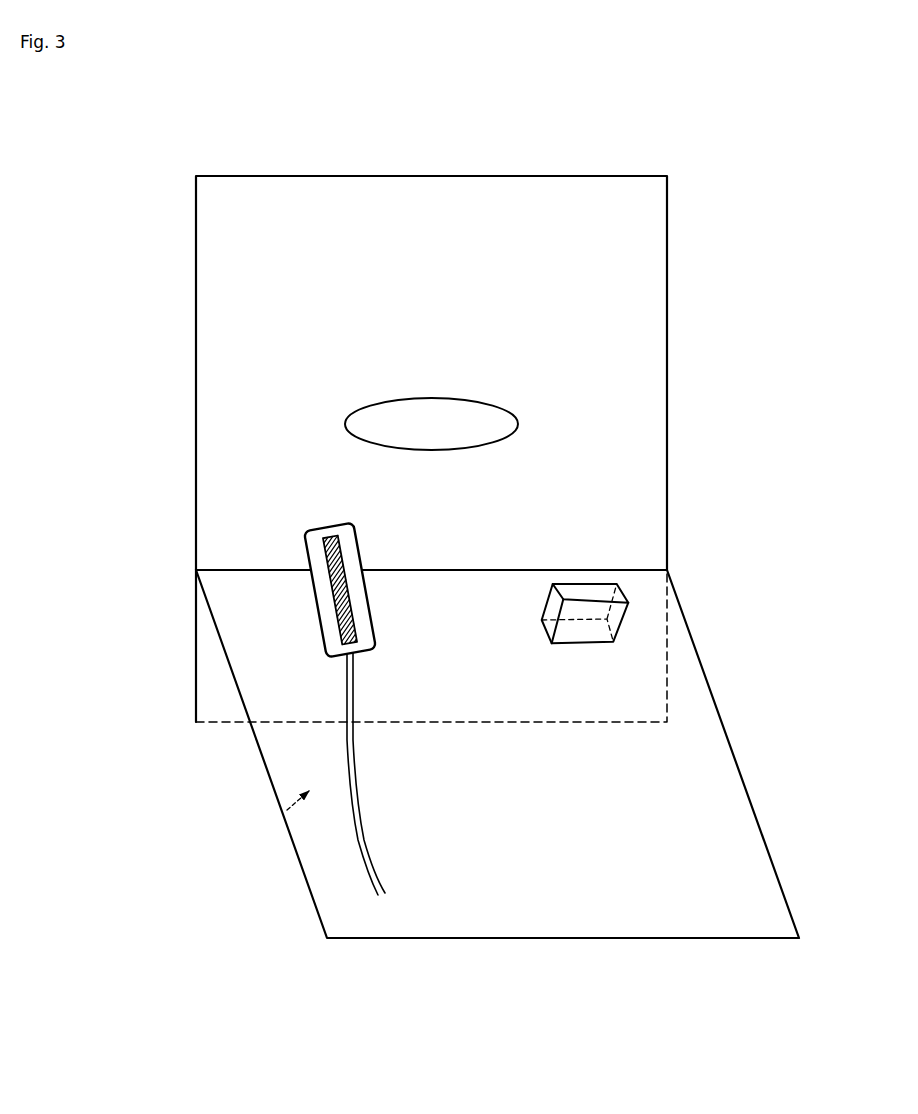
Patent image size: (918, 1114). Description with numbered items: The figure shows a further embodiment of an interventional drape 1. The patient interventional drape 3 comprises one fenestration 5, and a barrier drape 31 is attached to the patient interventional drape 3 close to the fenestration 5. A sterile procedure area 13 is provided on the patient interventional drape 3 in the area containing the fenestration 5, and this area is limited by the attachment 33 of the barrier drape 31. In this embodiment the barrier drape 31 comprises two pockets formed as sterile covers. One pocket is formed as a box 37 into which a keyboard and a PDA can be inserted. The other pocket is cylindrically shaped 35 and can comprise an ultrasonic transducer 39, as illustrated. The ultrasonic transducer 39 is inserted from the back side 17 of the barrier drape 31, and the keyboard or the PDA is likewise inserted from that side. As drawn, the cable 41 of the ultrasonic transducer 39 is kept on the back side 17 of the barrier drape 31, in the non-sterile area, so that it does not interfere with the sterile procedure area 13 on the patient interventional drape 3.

The interventional drape 1 is at (146, 533).
The patient interventional drape 3 is at (467, 449).
The fenestration 5 is at (468, 424).
The sterile procedure area 13 is at (630, 308).
The back side 17 is at (287, 810).
The barrier drape 31 is at (735, 755).
The attachment 33 is at (652, 567).
The cylindrically shaped pocket 35 is at (267, 661).
The box pocket 37 is at (628, 624).
The ultrasonic transducer 39 is at (334, 622).
The cable 41 is at (356, 838).